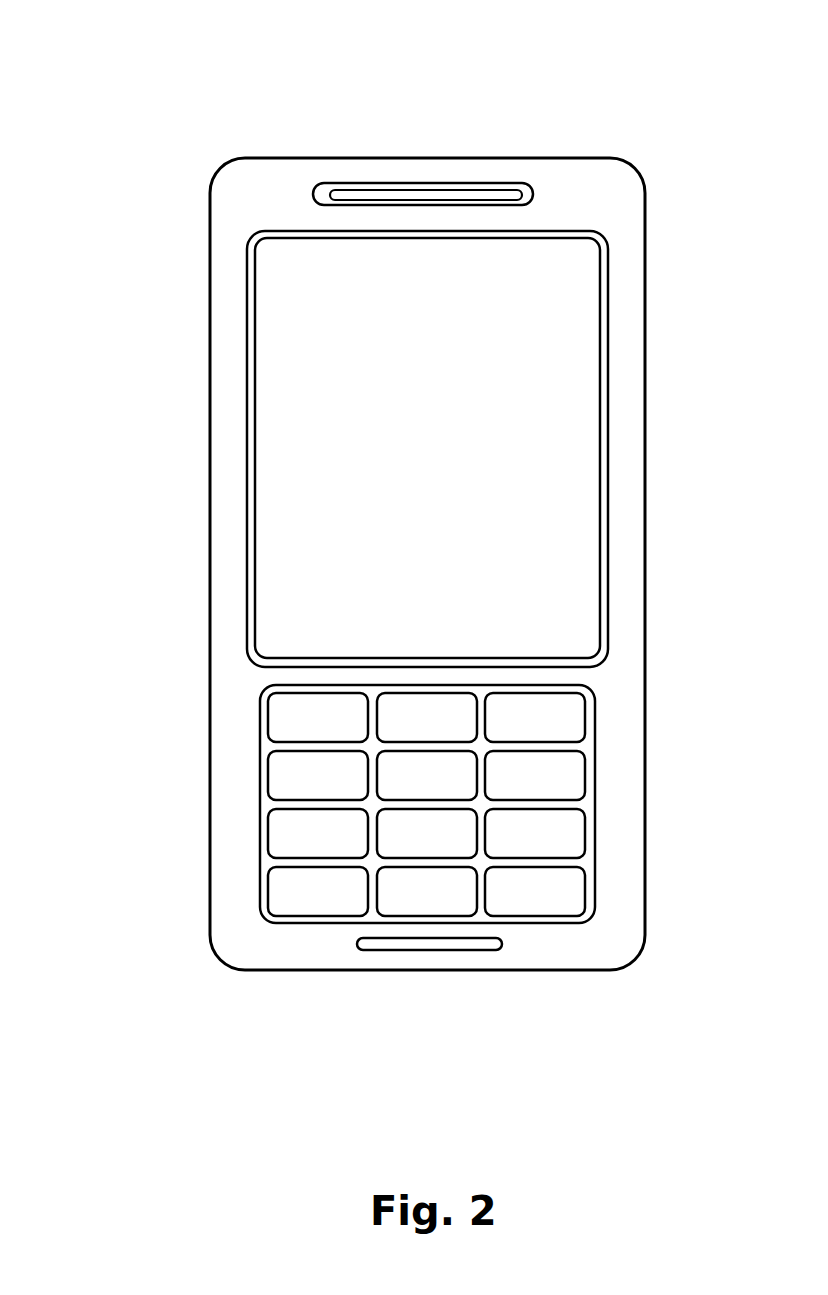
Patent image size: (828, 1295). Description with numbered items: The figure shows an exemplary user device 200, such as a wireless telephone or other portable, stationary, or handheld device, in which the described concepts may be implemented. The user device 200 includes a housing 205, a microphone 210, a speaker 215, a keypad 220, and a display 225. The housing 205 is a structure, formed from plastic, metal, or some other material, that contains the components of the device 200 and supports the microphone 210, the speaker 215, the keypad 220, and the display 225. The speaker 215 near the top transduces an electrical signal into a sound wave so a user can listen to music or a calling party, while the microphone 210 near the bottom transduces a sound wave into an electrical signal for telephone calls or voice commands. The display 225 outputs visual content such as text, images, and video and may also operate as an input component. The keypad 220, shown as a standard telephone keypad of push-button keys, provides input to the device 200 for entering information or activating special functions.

The user device 200 is at (215, 40).
The housing 205 is at (210, 440).
The microphone 210 is at (418, 950).
The speaker 215 is at (390, 183).
The keypad 220 is at (652, 685).
The display 225 is at (550, 230).